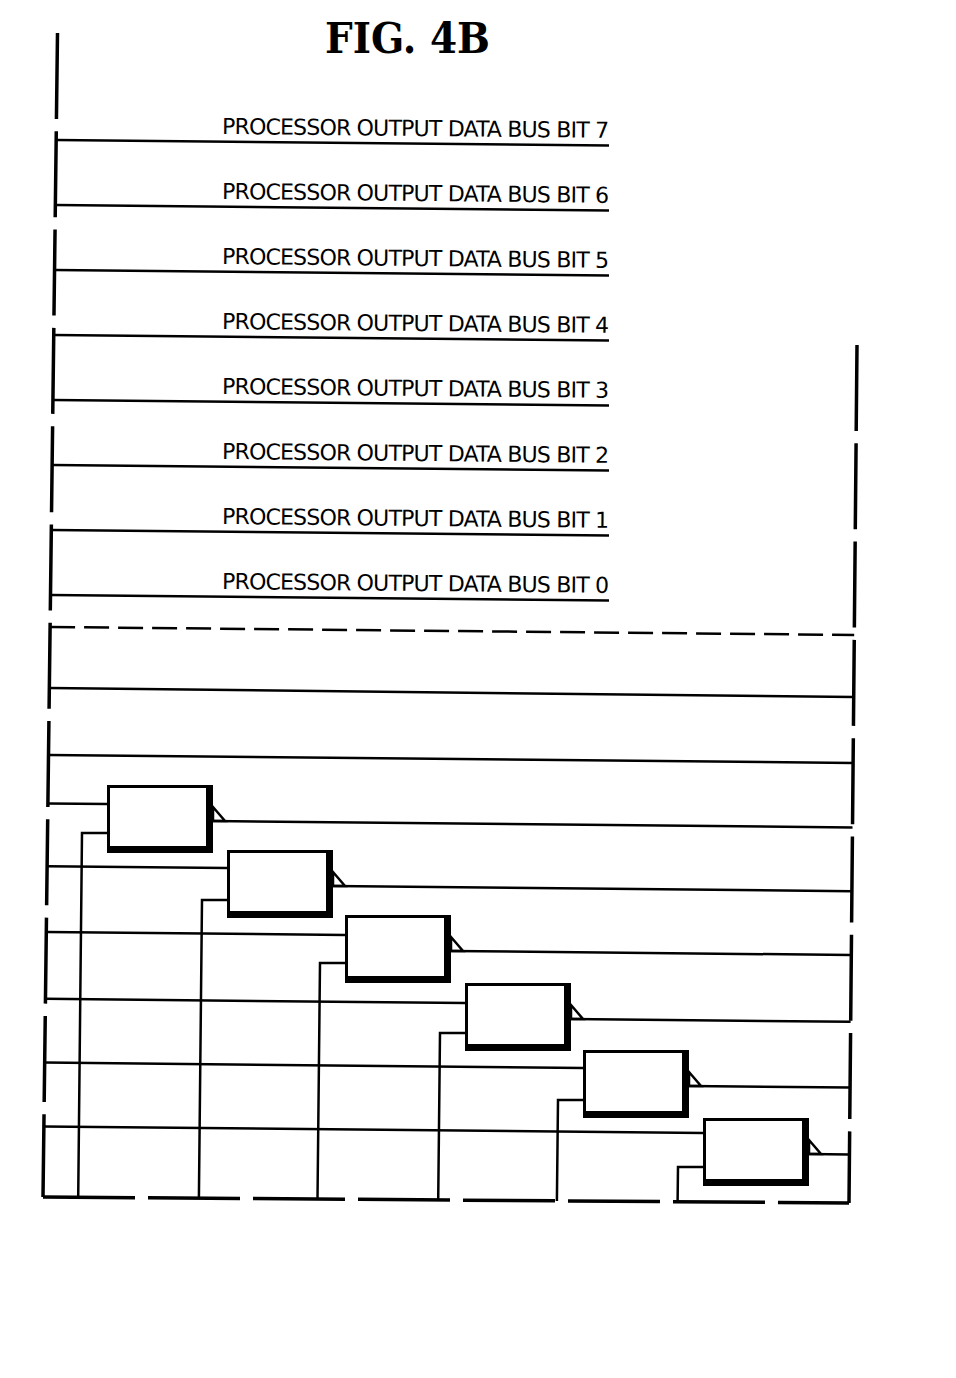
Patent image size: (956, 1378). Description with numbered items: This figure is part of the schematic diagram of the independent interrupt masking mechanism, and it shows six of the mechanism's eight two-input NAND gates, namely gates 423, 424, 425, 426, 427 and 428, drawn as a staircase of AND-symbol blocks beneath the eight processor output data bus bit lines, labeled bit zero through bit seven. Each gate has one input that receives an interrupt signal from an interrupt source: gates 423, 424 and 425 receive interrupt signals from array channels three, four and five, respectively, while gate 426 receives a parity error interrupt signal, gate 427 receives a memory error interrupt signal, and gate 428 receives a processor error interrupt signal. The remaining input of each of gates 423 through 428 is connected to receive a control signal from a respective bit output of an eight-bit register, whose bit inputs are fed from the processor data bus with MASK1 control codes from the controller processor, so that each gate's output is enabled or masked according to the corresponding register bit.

The two-input NAND gate 423 is at (214, 790).
The two-input NAND gate 424 is at (333, 855).
The two-input NAND gate 425 is at (451, 920).
The two-input NAND gate 426 is at (568, 986).
The two-input NAND gate 427 is at (686, 1053).
The two-input NAND gate 428 is at (757, 1119).